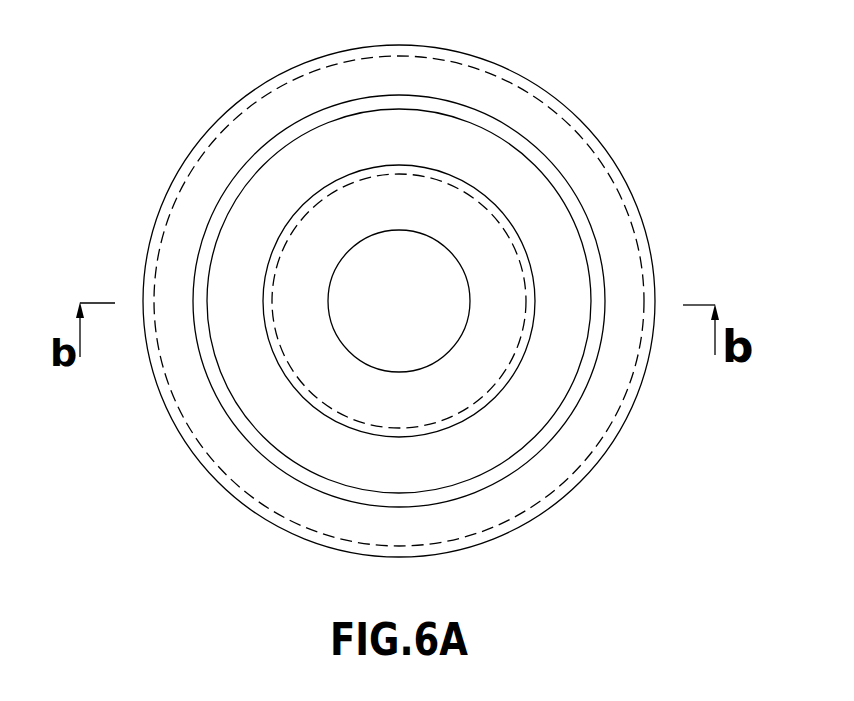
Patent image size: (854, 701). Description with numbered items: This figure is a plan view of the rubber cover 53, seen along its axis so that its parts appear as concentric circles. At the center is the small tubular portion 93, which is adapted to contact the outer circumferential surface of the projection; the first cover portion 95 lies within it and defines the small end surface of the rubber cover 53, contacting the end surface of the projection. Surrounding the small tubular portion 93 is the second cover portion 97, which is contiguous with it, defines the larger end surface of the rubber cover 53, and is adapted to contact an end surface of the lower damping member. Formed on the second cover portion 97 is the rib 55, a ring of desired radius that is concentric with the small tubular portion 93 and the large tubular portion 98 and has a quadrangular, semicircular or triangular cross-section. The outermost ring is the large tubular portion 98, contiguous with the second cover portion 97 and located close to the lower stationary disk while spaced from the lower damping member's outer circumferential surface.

The rubber cover 53 is at (218, 120).
The rib 55 is at (215, 228).
The small tubular portion 93 is at (518, 230).
The first cover portion 95 is at (501, 290).
The second cover portion 97 is at (542, 375).
The large tubular portion 98 is at (588, 472).